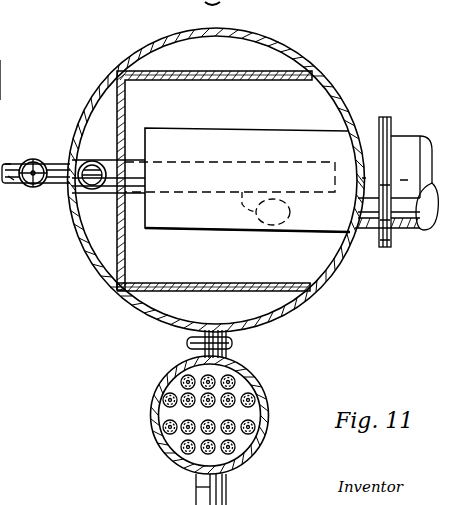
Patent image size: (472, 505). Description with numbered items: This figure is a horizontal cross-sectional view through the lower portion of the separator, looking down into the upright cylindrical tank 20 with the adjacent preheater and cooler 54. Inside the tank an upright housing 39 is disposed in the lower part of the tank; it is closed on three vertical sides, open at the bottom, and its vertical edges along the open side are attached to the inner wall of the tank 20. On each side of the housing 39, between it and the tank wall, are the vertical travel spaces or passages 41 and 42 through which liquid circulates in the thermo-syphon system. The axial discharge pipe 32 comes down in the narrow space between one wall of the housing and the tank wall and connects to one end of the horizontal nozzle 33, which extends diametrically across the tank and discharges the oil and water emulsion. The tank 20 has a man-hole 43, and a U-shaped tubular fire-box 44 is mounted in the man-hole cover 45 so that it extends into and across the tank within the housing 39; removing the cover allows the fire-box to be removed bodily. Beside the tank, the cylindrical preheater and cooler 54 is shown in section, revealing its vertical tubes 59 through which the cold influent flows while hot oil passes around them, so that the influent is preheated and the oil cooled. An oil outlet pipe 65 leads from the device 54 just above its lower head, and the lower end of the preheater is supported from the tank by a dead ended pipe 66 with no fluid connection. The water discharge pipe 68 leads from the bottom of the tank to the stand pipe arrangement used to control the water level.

The upright cylindrical tank 20 is at (0, 18).
The axial discharge pipe 32 is at (96, 186).
The horizontal nozzle 33 is at (273, 212).
The upright housing 39 is at (185, 284).
The vertical travel space 41 is at (285, 55).
The vertical travel space 42 is at (284, 318).
The man-hole 43 is at (383, 125).
The U-shaped tubular fire-box 44 is at (230, 150).
The man-hole cover 45 is at (404, 130).
The preheater and cooler 54 is at (152, 400).
The vertical tubes 59 is at (163, 426).
The oil outlet pipe 65 is at (196, 488).
The dead ended pipe 66 is at (192, 334).
The water discharge pipe 68 is at (55, 160).